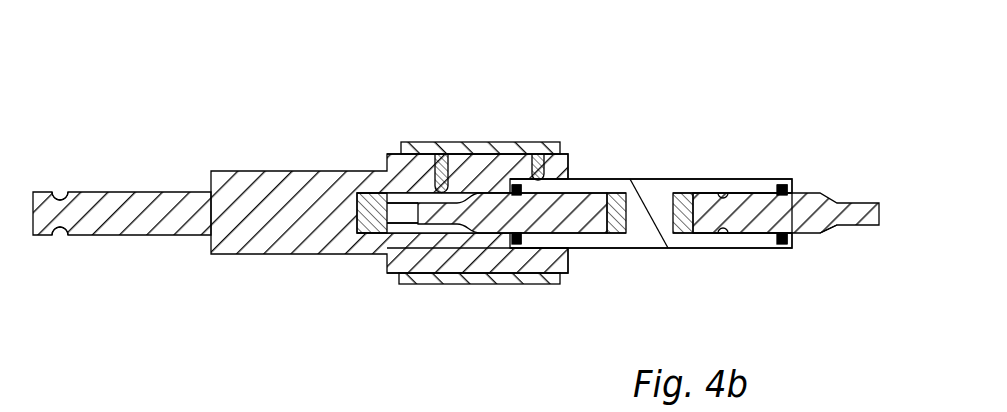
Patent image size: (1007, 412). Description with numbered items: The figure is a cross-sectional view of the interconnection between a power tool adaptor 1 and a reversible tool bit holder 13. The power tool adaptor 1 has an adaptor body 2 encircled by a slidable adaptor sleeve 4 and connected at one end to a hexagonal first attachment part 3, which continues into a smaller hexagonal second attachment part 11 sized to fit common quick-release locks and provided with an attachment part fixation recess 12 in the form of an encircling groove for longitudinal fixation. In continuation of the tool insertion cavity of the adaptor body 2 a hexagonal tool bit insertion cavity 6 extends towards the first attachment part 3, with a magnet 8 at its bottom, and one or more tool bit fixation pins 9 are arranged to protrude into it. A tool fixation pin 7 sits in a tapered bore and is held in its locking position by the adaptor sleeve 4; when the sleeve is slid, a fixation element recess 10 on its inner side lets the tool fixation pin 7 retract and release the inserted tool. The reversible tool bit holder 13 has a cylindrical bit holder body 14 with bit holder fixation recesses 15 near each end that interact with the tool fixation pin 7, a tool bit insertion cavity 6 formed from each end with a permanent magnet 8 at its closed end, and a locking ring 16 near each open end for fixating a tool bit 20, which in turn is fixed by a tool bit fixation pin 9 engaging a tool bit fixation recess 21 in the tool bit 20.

The power tool adaptor 1 is at (412, 200).
The adaptor body 2 is at (628, 178).
The first attachment part 3 is at (265, 190).
The adaptor sleeve 4 is at (483, 150).
The tool bit insertion cavity 6 is at (422, 165).
The tool fixation pin 7 is at (572, 178).
The magnet 8 is at (375, 192).
The tool bit fixation pin 9 is at (444, 158).
The fixation element recess 10 is at (438, 152).
The second attachment part 11 is at (163, 203).
The attachment part fixation recess 12 is at (62, 198).
The reversible tool bit holder 13 is at (693, 179).
The bit holder body 14 is at (655, 240).
The bit holder fixation recess 15 is at (766, 193).
The locking ring 16 is at (783, 185).
The tool bit 20 is at (489, 232).
The tool bit fixation recess 21 is at (689, 178).